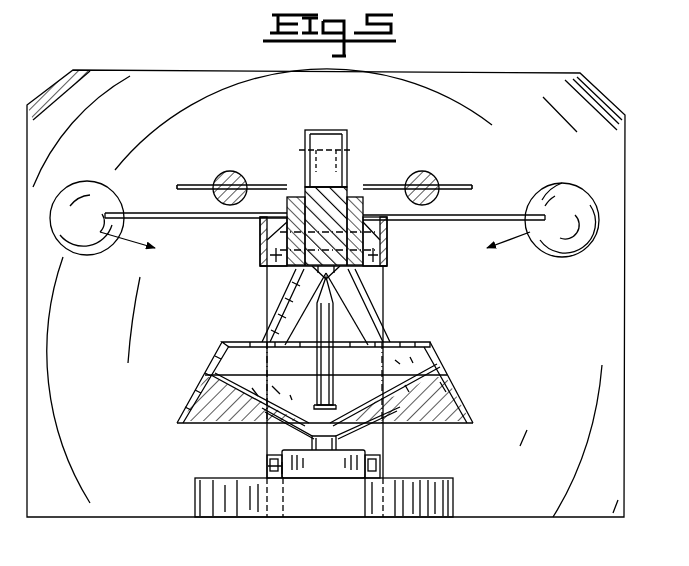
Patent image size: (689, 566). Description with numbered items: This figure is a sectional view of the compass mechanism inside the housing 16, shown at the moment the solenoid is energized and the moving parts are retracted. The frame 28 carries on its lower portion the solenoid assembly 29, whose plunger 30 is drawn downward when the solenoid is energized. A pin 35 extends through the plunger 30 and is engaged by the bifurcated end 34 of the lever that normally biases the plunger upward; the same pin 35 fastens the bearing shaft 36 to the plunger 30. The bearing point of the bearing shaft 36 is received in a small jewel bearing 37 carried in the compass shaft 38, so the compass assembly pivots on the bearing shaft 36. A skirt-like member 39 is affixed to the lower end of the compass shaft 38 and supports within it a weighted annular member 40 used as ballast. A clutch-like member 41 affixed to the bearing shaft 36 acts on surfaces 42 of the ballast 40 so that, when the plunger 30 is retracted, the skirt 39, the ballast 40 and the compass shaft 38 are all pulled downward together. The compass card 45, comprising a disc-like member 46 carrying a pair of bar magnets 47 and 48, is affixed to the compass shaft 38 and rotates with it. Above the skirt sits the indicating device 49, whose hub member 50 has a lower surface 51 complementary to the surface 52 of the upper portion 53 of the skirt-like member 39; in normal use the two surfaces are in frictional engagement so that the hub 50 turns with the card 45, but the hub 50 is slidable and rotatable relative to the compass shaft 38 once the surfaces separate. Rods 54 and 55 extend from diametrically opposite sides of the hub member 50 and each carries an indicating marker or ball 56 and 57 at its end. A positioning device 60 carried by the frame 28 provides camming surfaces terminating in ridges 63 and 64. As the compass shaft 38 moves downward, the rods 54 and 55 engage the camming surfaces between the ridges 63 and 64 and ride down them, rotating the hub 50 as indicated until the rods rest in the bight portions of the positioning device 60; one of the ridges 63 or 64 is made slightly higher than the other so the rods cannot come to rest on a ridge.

The housing 16 is at (47, 88).
The frame 28 is at (372, 313).
The solenoid assembly 29 is at (425, 510).
The plunger 30 is at (314, 466).
The bifurcated end 34 is at (274, 476).
The pin 35 is at (267, 462).
The bearing shaft 36 is at (381, 338).
The jewel bearing 37 is at (384, 285).
The compass shaft 38 is at (342, 132).
The skirt-like member 39 is at (410, 382).
The weighted annular member 40 is at (437, 415).
The clutch-like member 41 is at (427, 373).
The surfaces 42 is at (245, 382).
The compass card 45 is at (452, 185).
The disc-like member 46 is at (185, 185).
The bar magnet 47 is at (421, 183).
The bar magnet 48 is at (231, 183).
The indicating device 49 is at (543, 182).
The hub member 50 is at (355, 195).
The lower surface 51 is at (300, 272).
The surface 52 is at (370, 345).
The upper portion 53 is at (268, 300).
The rod 54 is at (150, 213).
The rod 55 is at (462, 222).
The indicating marker 56 is at (88, 192).
The indicating marker 57 is at (578, 215).
The positioning device 60 is at (392, 258).
The ridge 63 is at (266, 217).
The ridge 64 is at (383, 217).